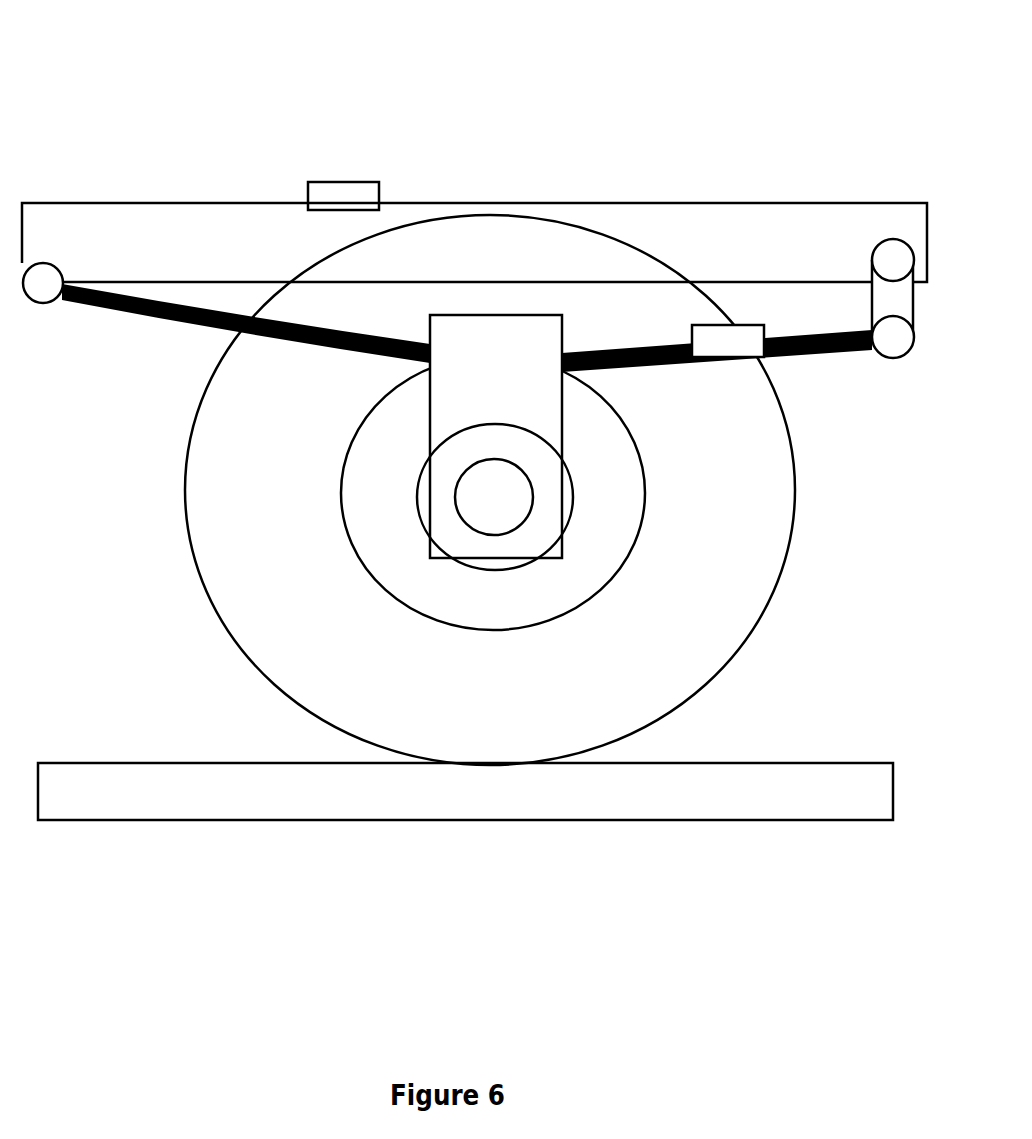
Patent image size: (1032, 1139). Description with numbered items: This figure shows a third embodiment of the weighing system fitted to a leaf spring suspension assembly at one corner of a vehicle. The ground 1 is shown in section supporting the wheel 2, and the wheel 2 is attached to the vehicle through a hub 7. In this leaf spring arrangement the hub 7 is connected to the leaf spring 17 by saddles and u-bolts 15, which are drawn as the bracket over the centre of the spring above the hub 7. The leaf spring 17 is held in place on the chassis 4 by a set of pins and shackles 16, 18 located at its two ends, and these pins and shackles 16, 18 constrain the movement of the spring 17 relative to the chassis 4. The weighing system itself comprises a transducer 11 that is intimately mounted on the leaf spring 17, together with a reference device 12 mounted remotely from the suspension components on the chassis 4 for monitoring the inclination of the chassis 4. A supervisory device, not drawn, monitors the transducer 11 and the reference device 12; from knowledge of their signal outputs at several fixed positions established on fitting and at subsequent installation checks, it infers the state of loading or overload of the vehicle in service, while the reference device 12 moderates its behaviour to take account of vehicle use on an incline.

The ground 1 is at (758, 820).
The wheel 2 is at (208, 639).
The chassis 4 is at (134, 269).
The hub 7 is at (558, 502).
The transducer 11 is at (706, 299).
The reference device 12 is at (364, 158).
The saddles and u-bolts 15 is at (549, 397).
The pins and shackles 16 is at (44, 246).
The leaf spring 17 is at (233, 290).
The pins and shackles 18 is at (867, 279).